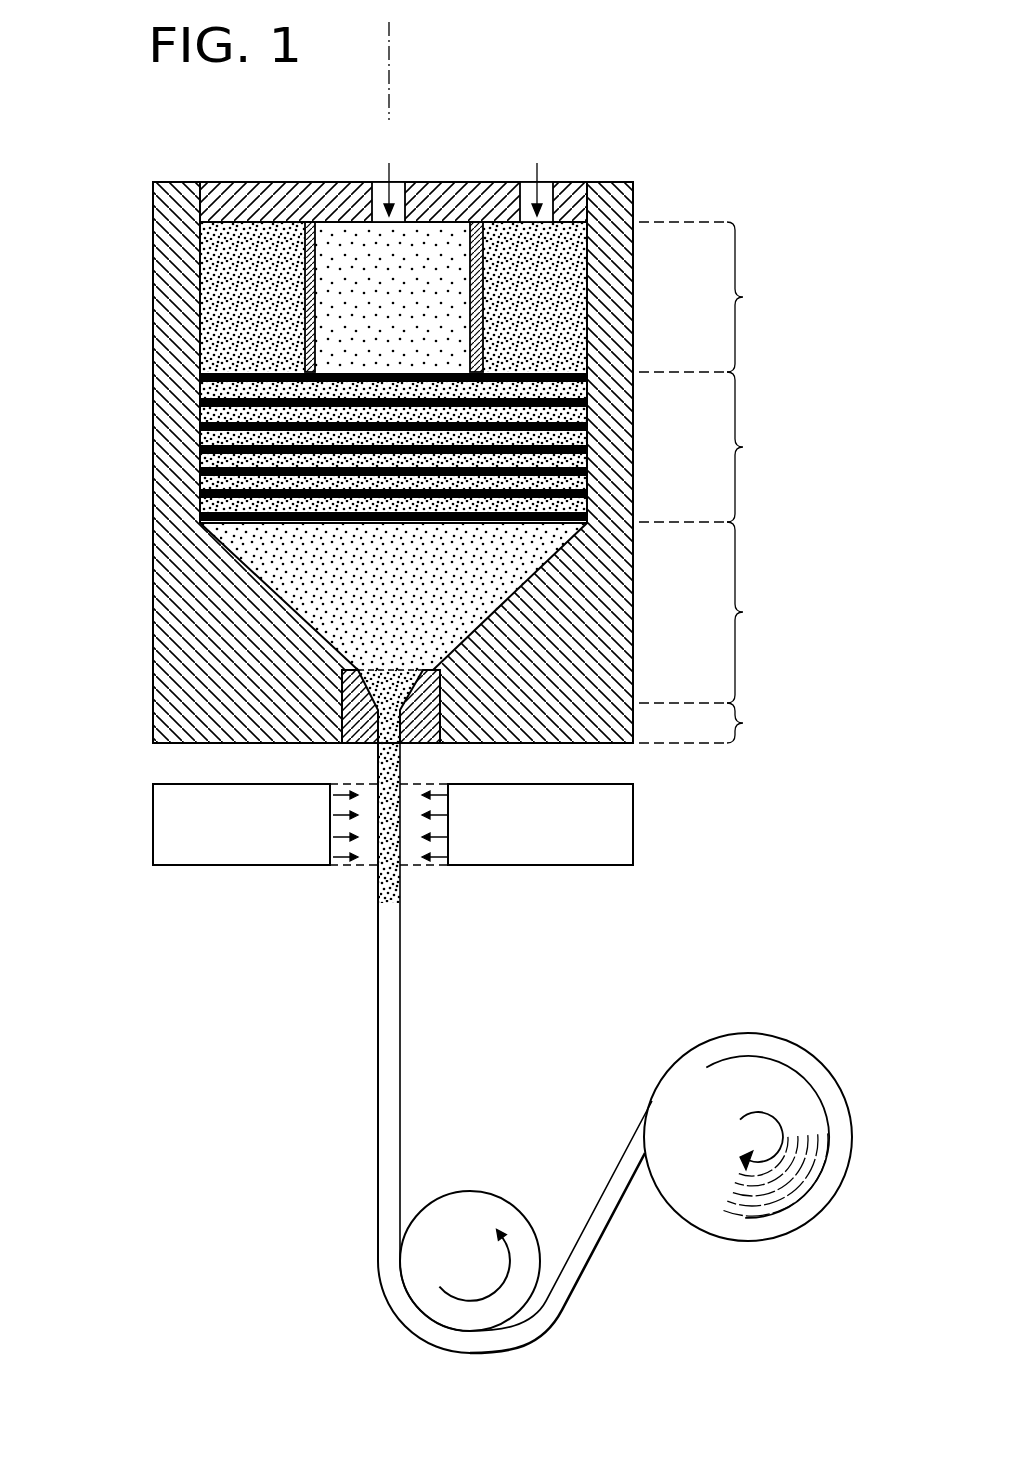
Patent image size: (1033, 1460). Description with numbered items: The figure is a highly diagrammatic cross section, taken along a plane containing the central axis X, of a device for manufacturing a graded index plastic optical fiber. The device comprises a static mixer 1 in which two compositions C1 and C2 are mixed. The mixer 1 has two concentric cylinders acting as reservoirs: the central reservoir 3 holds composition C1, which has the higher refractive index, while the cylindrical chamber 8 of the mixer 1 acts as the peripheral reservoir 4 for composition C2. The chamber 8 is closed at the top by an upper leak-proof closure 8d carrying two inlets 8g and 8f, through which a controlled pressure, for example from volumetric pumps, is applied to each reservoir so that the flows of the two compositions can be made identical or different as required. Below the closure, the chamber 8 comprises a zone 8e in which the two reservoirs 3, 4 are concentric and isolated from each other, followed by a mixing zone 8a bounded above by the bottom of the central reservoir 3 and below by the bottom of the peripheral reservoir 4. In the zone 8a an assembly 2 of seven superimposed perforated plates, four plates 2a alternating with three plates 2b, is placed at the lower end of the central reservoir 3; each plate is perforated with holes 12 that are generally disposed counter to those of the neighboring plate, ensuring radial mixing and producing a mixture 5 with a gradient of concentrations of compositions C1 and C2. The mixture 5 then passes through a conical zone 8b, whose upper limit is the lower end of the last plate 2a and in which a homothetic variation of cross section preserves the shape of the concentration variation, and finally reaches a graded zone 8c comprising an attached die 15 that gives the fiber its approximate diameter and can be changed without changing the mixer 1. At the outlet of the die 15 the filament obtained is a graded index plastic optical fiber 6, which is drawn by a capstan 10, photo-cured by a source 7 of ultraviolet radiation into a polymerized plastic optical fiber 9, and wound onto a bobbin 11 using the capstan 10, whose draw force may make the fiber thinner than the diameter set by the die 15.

The static mixer 1 is at (662, 193).
The assembly of superimposed plates 2 is at (385, 453).
The plate 2a is at (227, 377).
The plate 2b is at (590, 458).
The central reservoir 3 is at (262, 182).
The peripheral reservoir 4 is at (180, 223).
The mixture 5 is at (257, 577).
The graded index plastic optical fiber 6 is at (405, 765).
The source of ultraviolet radiation 7 is at (610, 823).
The cylindrical chamber 8 is at (146, 318).
The mixing zone 8a is at (714, 447).
The conical zone 8b is at (712, 612).
The graded zone 8c is at (713, 723).
The upper leak-proof closure 8d is at (483, 200).
The zone 8e is at (715, 297).
The inlet 8f is at (543, 190).
The inlet 8g is at (405, 182).
The polymerized plastic optical fiber 9 is at (385, 1015).
The capstan 10 is at (477, 1207).
The bobbin 11 is at (773, 1075).
The holes 12 is at (600, 380).
The die 15 is at (362, 730).
The composition C1 is at (344, 182).
The composition C2 is at (220, 277).
The central axis X is at (389, 98).